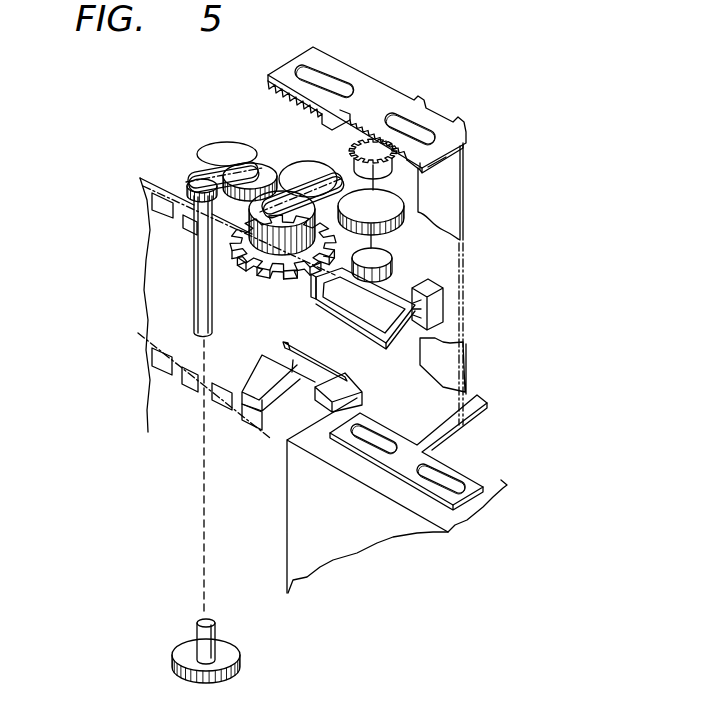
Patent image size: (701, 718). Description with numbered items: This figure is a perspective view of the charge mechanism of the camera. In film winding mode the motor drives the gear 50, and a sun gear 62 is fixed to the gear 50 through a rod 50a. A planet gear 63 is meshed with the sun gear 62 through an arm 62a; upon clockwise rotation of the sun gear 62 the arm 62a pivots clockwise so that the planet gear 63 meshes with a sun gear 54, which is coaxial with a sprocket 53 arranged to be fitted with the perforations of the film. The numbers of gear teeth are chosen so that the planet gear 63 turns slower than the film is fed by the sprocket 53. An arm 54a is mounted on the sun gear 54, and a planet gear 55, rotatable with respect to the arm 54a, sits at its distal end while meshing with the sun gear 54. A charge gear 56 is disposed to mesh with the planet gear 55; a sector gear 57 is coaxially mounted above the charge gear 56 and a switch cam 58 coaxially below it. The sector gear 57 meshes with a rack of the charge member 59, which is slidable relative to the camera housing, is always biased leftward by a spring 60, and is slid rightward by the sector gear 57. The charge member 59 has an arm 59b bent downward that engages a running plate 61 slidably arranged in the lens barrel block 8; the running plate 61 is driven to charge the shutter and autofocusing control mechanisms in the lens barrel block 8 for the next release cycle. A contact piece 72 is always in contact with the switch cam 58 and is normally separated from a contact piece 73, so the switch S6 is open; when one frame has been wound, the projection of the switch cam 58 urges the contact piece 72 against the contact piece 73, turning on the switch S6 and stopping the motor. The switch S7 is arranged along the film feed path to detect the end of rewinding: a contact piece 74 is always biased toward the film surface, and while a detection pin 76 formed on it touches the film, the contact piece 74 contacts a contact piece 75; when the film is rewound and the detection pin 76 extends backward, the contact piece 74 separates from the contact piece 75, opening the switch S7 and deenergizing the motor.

The lens barrel block 8 is at (288, 528).
The gear 50 is at (178, 655).
The rod 50a is at (192, 265).
The sprocket 53 is at (241, 273).
The sun gear 54 is at (249, 208).
The arm 54a is at (300, 162).
The planet gear 55 is at (350, 138).
The charge gear 56 is at (380, 207).
The sector gear 57 is at (398, 178).
The switch cam 58 is at (385, 258).
The charge member 59 is at (378, 74).
The arm 59b is at (453, 195).
The spring 60 is at (292, 97).
The running plate 61 is at (490, 406).
The sun gear 62 is at (192, 185).
The arm 62a is at (200, 174).
The planet gear 63 is at (236, 165).
The contact piece 72 is at (348, 306).
The contact piece 73 is at (316, 301).
The contact piece 74 is at (262, 356).
The contact piece 75 is at (284, 344).
The detection pin 76 is at (243, 392).
The switch S6 is at (448, 315).
The switch S7 is at (362, 383).